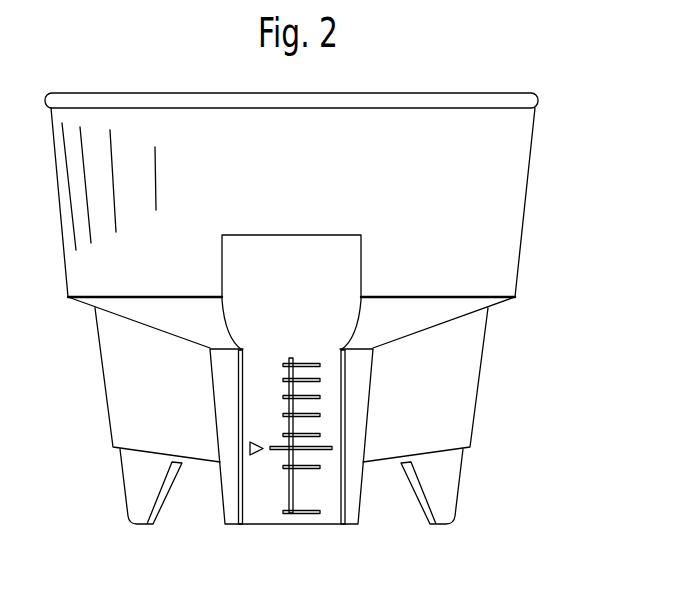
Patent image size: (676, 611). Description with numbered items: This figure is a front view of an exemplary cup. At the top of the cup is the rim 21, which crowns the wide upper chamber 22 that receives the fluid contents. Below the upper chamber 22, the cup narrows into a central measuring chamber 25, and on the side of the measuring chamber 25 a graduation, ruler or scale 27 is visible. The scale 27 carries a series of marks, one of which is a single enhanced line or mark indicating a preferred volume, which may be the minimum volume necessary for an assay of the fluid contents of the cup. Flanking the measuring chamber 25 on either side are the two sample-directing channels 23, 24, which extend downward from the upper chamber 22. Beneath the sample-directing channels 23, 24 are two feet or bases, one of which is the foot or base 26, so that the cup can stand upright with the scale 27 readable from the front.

The rim 21 is at (535, 93).
The upper chamber 22 is at (442, 170).
The sample-directing channel 23 is at (133, 385).
The sample-directing channel 24 is at (453, 385).
The measuring chamber 25 is at (228, 403).
The foot or base 26 is at (142, 480).
The graduation, ruler or scale 27 is at (295, 487).